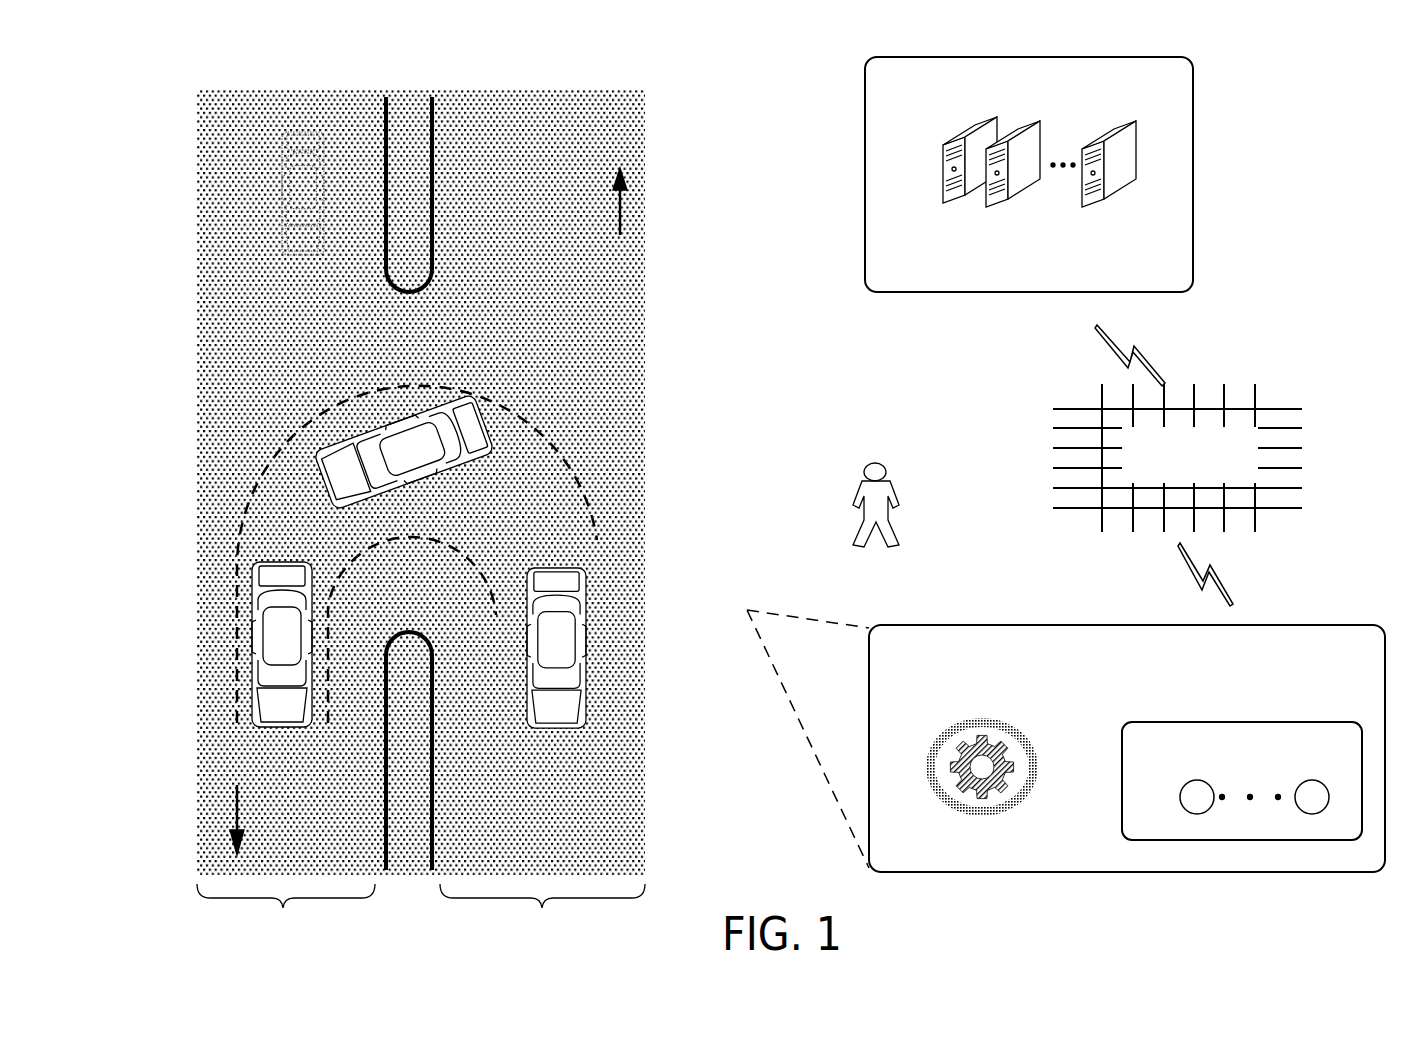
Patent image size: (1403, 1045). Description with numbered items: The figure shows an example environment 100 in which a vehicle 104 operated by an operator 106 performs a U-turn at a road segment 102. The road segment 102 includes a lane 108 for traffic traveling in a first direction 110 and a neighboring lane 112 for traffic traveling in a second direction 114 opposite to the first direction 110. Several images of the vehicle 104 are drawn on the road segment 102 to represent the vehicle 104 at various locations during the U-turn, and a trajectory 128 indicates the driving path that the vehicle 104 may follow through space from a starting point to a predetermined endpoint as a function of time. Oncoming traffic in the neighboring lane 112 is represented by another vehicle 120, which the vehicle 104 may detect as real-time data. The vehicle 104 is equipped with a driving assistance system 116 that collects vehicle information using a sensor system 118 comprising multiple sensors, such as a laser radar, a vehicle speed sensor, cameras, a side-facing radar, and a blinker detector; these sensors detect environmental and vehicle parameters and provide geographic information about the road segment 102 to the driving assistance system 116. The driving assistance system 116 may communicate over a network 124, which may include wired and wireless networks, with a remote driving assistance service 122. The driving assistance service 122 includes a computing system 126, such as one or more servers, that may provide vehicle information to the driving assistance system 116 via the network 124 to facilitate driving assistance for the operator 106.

The environment 100 is at (190, 52).
The road segment 102 is at (595, 132).
The vehicle 104 is at (1188, 660).
The operator 106 is at (822, 517).
The lane 108 is at (542, 916).
The first direction 110 is at (620, 215).
The neighboring lane 112 is at (286, 916).
The second direction 114 is at (235, 820).
The driving assistance system 116 is at (997, 725).
The sensor system 118 is at (1343, 754).
The vehicle 120 is at (278, 245).
The driving assistance service 122 is at (1173, 88).
The network 124 is at (1177, 465).
The computing system 126 is at (1039, 199).
The trajectory 128 is at (542, 482).